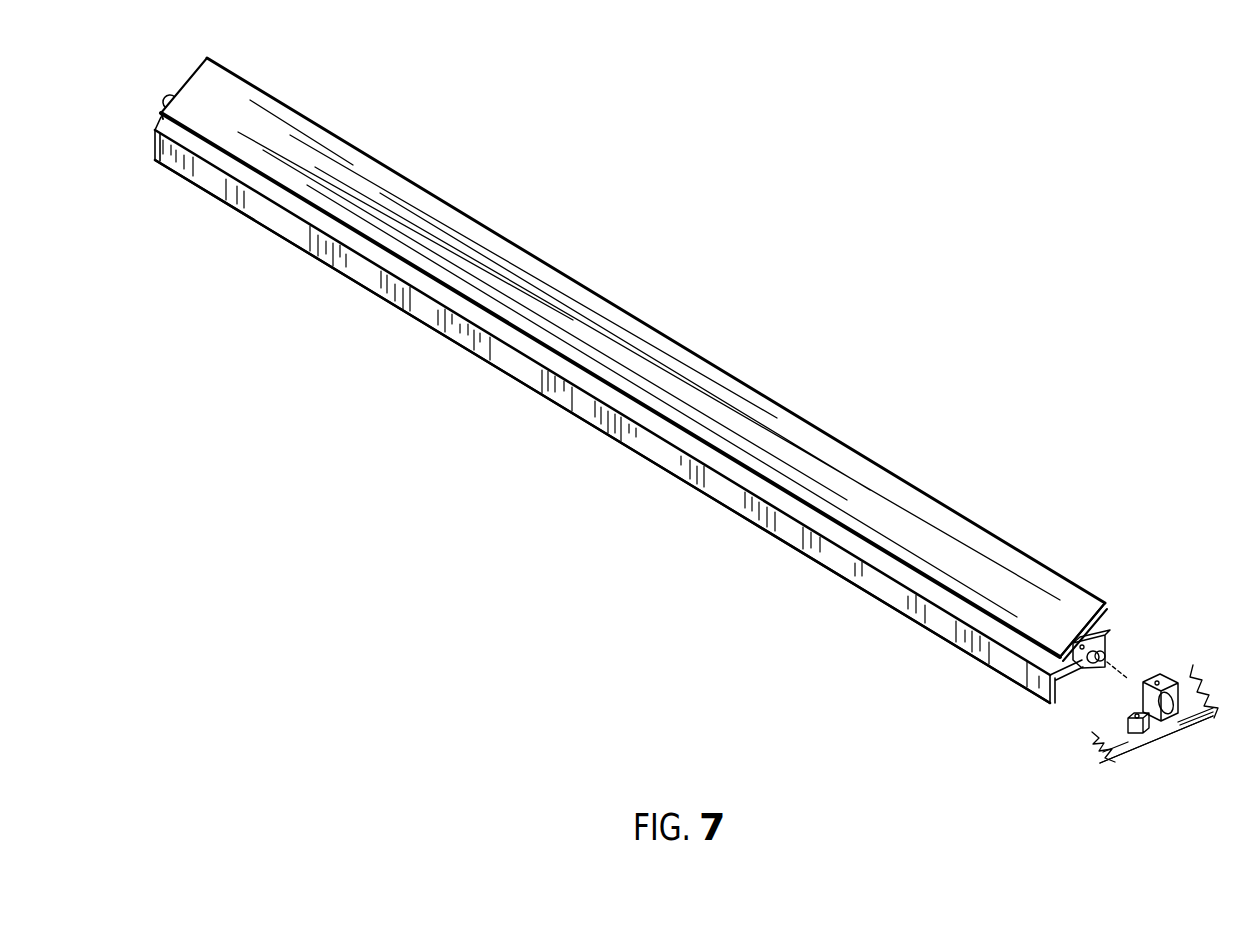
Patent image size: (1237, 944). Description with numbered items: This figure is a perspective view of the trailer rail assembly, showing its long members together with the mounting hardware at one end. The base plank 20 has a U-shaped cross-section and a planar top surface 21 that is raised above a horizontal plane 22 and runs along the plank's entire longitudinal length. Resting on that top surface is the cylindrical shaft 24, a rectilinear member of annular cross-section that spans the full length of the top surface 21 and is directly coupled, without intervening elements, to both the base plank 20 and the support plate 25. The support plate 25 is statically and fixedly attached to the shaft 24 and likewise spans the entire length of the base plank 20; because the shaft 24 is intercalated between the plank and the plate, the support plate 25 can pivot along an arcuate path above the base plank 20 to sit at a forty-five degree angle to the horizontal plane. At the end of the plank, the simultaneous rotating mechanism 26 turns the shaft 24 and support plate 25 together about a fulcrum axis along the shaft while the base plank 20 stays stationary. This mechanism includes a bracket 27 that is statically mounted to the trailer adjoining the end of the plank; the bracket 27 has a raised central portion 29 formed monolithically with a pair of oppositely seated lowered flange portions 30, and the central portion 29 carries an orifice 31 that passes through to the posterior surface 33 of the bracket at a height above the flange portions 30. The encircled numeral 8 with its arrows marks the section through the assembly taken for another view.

The section line indicator for FIG. 8 is at (633, 367).
The base plank 20 is at (619, 410).
The planar top surface 21 is at (732, 482).
The horizontal plane 22 is at (923, 627).
The cylindrical shaft 24 is at (1082, 662).
The support plate 25 is at (1088, 590).
The simultaneous rotating mechanism 26 is at (1100, 625).
The bracket 27 is at (1115, 692).
The raised central portion 29 is at (1100, 730).
The lowered flange portions 30 is at (1136, 722).
The orifice 31 is at (1152, 735).
The posterior surface 33 is at (1174, 724).